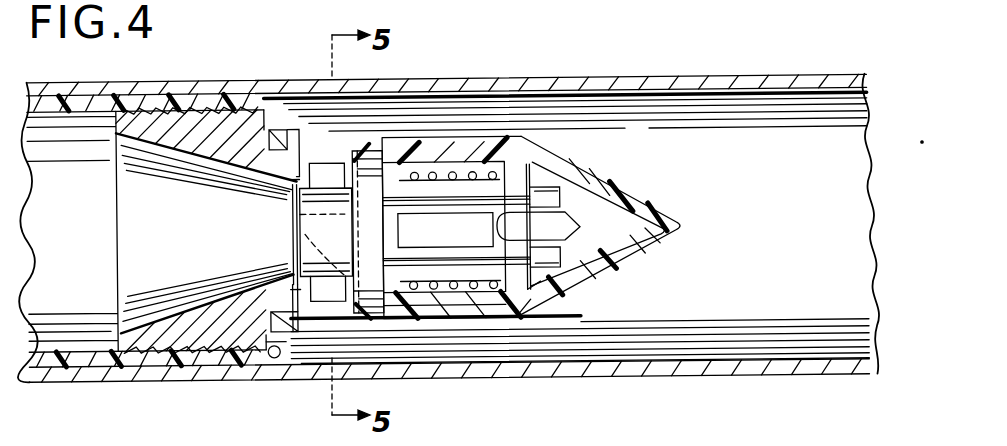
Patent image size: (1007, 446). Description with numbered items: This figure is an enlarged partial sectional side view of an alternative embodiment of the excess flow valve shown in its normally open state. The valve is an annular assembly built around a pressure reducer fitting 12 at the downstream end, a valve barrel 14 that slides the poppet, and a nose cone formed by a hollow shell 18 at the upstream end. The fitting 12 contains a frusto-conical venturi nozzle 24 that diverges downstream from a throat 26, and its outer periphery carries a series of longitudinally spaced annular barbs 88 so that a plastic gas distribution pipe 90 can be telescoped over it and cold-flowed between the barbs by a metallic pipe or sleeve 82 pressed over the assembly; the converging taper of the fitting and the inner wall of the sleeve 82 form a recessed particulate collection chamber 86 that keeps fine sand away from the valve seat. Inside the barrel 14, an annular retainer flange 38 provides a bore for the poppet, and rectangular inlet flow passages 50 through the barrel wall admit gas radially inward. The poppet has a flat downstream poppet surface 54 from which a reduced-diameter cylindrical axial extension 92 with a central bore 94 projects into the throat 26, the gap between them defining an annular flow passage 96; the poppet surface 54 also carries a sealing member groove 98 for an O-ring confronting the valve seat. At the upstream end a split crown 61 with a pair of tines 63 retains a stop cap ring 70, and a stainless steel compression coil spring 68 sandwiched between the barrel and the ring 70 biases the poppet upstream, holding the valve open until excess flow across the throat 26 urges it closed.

The pressure reducer fitting 12 is at (278, 128).
The valve barrel 14 is at (403, 326).
The hollow shell 18 is at (632, 186).
The venturi orifice or nozzle 24 is at (160, 137).
The throat 26 is at (292, 280).
The annular retainer flange 38 is at (395, 161).
The inlet flow passages 50 is at (330, 302).
The poppet surface 54 is at (345, 298).
The split crown 61 is at (551, 188).
The tines 63 is at (590, 230).
The compression coil spring 68 is at (480, 297).
The stop cap ring 70 is at (540, 282).
The pipe or sleeve 82 is at (652, 379).
The particulate collection chamber 86 is at (263, 357).
The annular barbs 88 is at (167, 368).
The plastic gas distribution pipe 90 is at (110, 370).
The cylindrical axial extension 92 is at (340, 186).
The central bore 94 is at (296, 222).
The annular flow passage 96 is at (318, 178).
The sealing member groove 98 is at (283, 352).